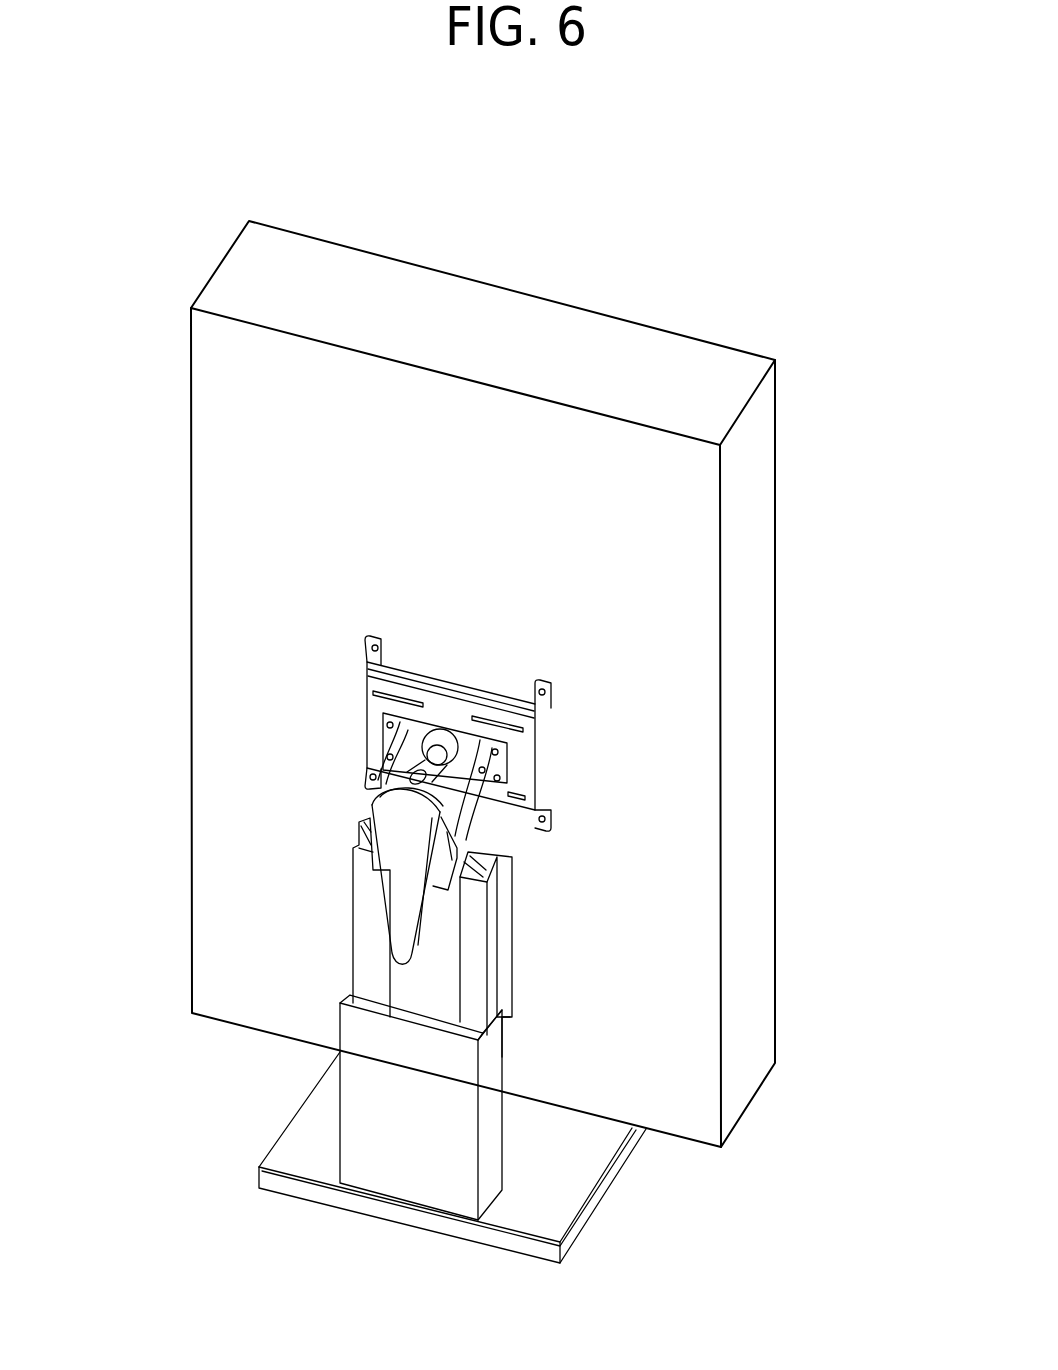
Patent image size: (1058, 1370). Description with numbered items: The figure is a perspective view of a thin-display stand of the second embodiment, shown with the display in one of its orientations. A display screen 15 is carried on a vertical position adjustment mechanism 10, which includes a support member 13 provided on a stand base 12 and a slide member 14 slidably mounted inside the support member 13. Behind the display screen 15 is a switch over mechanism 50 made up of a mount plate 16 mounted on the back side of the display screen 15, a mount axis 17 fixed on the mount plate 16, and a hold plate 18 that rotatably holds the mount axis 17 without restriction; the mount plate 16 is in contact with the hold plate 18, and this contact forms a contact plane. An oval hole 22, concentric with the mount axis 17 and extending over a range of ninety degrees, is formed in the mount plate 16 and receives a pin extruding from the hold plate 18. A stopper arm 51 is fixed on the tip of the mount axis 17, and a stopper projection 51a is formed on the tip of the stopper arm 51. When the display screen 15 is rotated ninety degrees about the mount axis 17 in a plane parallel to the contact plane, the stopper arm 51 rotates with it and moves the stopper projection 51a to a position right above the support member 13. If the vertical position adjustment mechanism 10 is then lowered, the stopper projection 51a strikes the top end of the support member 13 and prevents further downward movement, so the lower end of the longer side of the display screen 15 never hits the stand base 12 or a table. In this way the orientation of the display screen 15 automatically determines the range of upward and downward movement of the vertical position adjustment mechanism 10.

The vertical position adjustment mechanism 10 is at (318, 1010).
The stand base 12 is at (570, 1172).
The support member 13 is at (405, 1162).
The slide member 14 is at (475, 978).
The display screen 15 is at (557, 363).
The mount plate 16 is at (465, 707).
The mount axis 17 is at (532, 742).
The hold plate 18 is at (403, 710).
The oval hole 22 is at (447, 716).
The switch over mechanism 50 is at (330, 761).
The stopper arm 51 is at (402, 907).
The stopper projection 51a is at (427, 936).